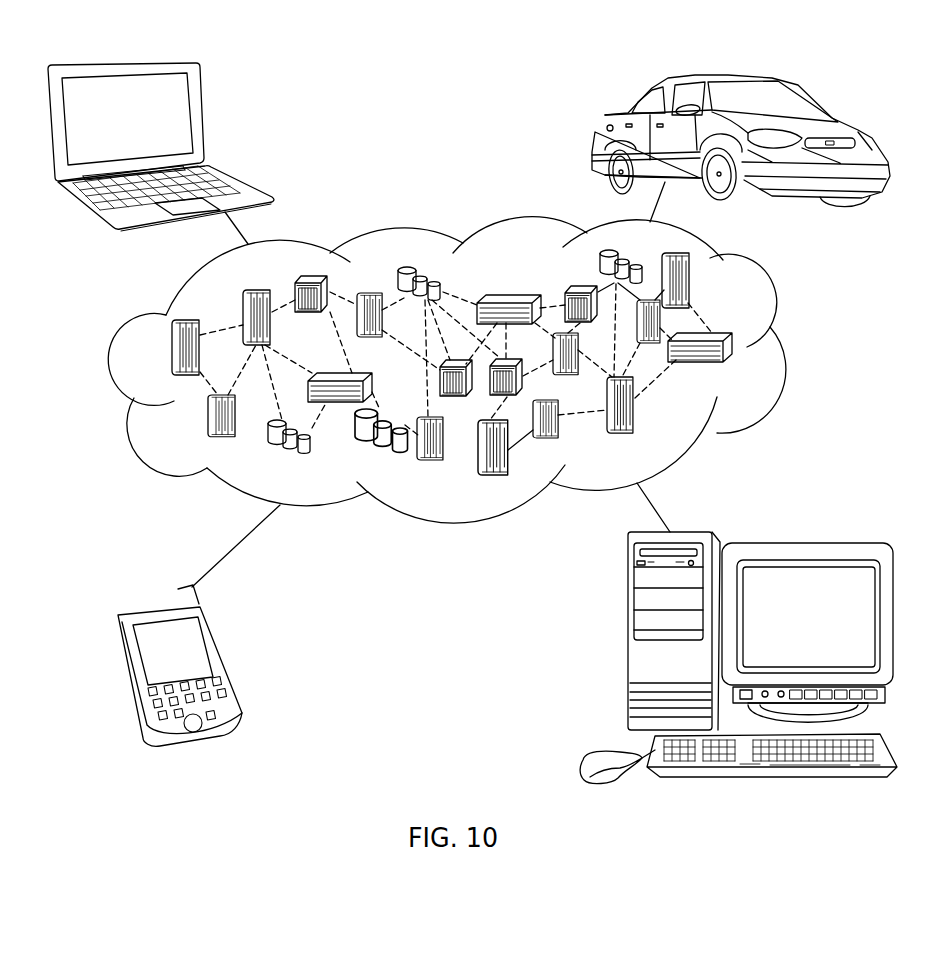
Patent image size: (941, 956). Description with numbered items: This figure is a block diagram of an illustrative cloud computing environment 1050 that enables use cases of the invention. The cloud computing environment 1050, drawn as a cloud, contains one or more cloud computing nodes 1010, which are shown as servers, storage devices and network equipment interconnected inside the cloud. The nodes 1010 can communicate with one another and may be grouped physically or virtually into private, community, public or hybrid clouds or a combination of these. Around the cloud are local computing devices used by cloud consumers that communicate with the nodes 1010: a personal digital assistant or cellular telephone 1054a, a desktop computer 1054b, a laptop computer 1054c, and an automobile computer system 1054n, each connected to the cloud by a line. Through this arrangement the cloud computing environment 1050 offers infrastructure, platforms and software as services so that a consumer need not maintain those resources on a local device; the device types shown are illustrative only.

The cloud computing nodes 1010 is at (747, 367).
The cloud computing environment 1050 is at (772, 295).
The personal digital assistant (PDA) or cellular telephone 1054a is at (220, 650).
The desktop computer 1054b is at (628, 657).
The laptop computer 1054c is at (203, 108).
The automobile computer system 1054n is at (605, 119).